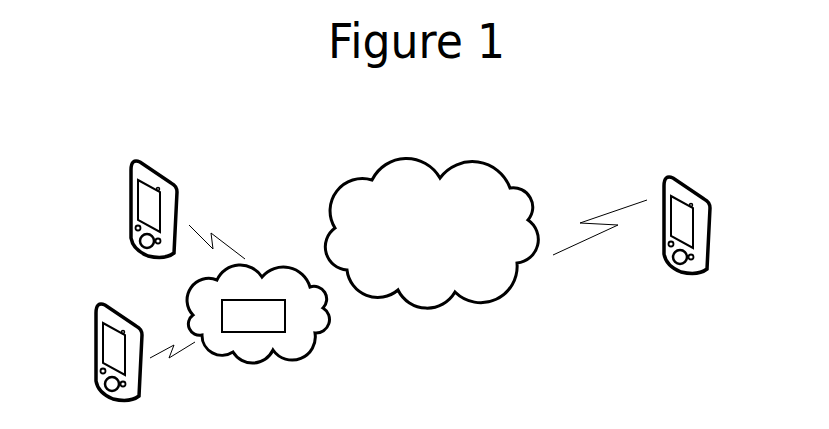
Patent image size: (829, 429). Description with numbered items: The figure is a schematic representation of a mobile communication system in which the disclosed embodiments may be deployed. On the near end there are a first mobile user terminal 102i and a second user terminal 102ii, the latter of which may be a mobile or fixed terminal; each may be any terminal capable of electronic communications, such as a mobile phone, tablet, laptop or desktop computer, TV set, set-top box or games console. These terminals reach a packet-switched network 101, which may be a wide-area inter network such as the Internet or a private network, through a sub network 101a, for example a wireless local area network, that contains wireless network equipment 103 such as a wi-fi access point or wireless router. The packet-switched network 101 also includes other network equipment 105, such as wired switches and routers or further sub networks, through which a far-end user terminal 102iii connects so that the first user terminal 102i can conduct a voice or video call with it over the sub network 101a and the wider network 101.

The packet-switched network 101 is at (447, 168).
The sub network 101a is at (310, 347).
The first mobile user terminal 102i is at (131, 210).
The second user terminal 102ii is at (96, 367).
The far-end user terminal 102iii is at (715, 244).
The wireless network equipment 103 is at (272, 326).
The other network equipment 105 is at (478, 273).